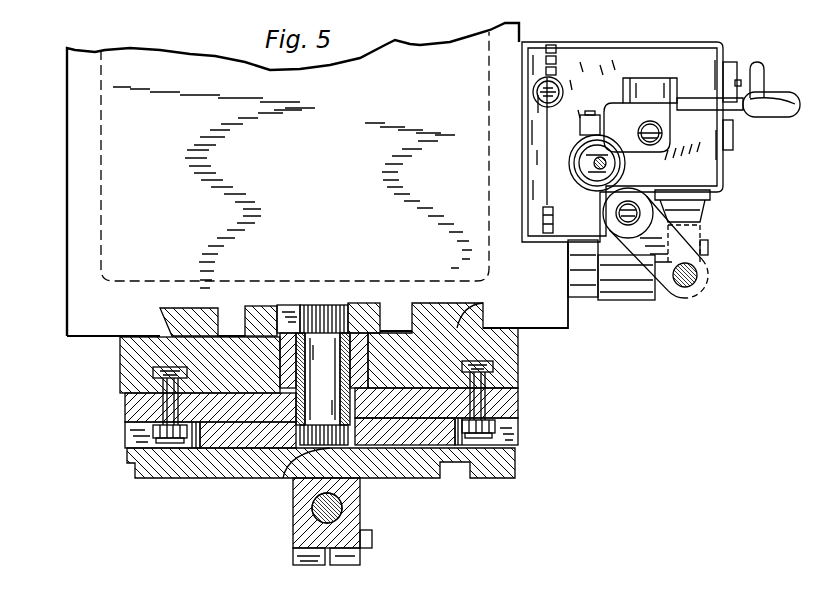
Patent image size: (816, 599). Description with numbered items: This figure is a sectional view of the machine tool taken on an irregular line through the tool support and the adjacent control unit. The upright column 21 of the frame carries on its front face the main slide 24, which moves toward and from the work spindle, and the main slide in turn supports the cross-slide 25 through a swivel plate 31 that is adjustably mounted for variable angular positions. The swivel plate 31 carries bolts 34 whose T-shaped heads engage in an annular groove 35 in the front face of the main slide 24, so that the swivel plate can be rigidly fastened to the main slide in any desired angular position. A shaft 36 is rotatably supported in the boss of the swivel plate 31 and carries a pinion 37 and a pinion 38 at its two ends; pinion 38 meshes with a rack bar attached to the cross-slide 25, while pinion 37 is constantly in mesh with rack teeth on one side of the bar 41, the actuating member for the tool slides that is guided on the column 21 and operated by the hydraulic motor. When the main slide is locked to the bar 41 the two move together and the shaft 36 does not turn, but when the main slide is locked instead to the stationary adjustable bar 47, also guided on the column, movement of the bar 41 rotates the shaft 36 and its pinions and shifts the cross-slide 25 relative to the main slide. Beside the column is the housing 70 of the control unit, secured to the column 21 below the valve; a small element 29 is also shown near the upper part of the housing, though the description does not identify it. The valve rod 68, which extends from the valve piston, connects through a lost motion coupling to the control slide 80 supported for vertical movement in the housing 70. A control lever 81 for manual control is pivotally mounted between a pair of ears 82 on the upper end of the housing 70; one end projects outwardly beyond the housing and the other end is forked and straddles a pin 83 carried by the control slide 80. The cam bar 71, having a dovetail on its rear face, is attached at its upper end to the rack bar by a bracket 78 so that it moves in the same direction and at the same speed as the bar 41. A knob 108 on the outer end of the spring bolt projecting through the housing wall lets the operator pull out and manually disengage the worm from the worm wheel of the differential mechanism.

The upright column 21 is at (78, 253).
The main slide 24 is at (125, 378).
The cross-slide 25 is at (218, 470).
The screw 29 is at (533, 96).
The swivel plate 31 is at (518, 410).
The bolts 34 is at (165, 404).
The annular groove 35 is at (496, 366).
The shaft 36 is at (323, 389).
The pinion 37 is at (335, 305).
The pinion 38 is at (283, 478).
The bar 41 is at (368, 305).
The adjustable bar 47 is at (261, 305).
The valve rod 68 is at (607, 164).
The housing 70 is at (633, 42).
The cam bar 71 is at (706, 282).
The bracket 78 is at (685, 288).
The control slide 80 is at (590, 188).
The control lever 81 is at (780, 93).
The ears 82 is at (668, 80).
The pin 83 is at (590, 111).
The knob 108 is at (760, 64).